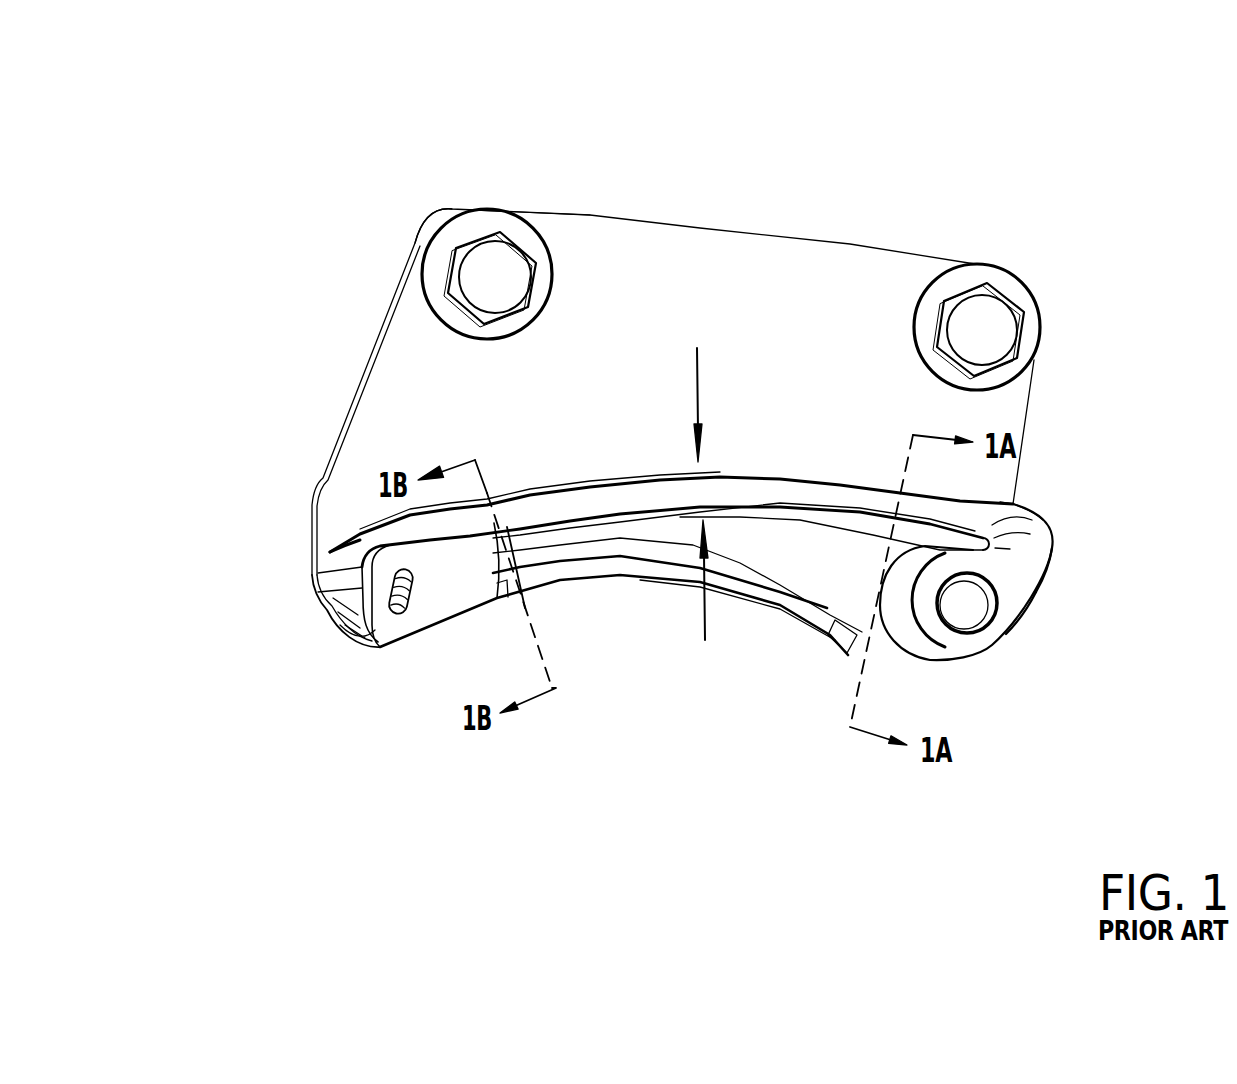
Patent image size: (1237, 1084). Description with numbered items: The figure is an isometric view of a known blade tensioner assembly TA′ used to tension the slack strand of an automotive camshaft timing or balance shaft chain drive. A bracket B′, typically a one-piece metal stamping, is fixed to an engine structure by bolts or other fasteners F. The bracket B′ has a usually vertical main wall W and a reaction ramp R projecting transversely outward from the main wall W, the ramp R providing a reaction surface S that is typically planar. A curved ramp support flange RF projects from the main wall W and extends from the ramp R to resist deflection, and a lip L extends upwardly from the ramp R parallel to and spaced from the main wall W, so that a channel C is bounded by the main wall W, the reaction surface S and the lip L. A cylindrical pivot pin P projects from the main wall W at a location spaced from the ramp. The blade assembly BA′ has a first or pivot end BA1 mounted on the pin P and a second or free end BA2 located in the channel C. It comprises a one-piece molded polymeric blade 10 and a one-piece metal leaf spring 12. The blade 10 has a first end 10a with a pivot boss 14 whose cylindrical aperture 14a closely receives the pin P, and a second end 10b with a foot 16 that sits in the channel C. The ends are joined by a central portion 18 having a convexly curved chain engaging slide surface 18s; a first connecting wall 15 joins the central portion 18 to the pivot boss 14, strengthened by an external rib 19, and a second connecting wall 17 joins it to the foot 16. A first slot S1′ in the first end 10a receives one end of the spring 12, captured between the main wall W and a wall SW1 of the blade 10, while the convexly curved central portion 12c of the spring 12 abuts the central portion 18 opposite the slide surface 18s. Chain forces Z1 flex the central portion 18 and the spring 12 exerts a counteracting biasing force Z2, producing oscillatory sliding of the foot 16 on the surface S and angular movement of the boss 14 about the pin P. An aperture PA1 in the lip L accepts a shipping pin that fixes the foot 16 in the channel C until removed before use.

The blade tensioner assembly TA′ is at (940, 150).
The bracket B′ is at (738, 230).
The main wall W is at (637, 243).
The fasteners F is at (503, 267).
The chain forces Z1 is at (697, 355).
The spring biasing force Z2 is at (707, 618).
The blade assembly BA′ is at (815, 488).
The blade 10 is at (540, 508).
The chain engaging slide surface 18s is at (600, 480).
The central portion 18 is at (747, 492).
The central portion of the spring 12c is at (838, 518).
The leaf spring 12 is at (533, 537).
The ramp support flange RF is at (602, 567).
The pivot boss 14 is at (1003, 643).
The cylindrical aperture 14a is at (958, 613).
The pivot pin P is at (978, 603).
The external rib 19 is at (1052, 555).
The first connecting wall 15 is at (1042, 583).
The first end of the blade 10a is at (1015, 508).
The first slot S1′ is at (1005, 513).
The wall SW1 is at (998, 530).
The first end of the blade assembly BA1 is at (1030, 540).
The second end of the blade assembly BA2 is at (375, 514).
The channel C is at (312, 634).
The reaction surface S is at (335, 628).
The second end of the blade 10b is at (338, 560).
The lip L is at (368, 540).
The second connecting wall 17 is at (350, 597).
The foot 16 is at (360, 607).
The reaction ramp R is at (363, 640).
The aperture PA1 is at (413, 607).